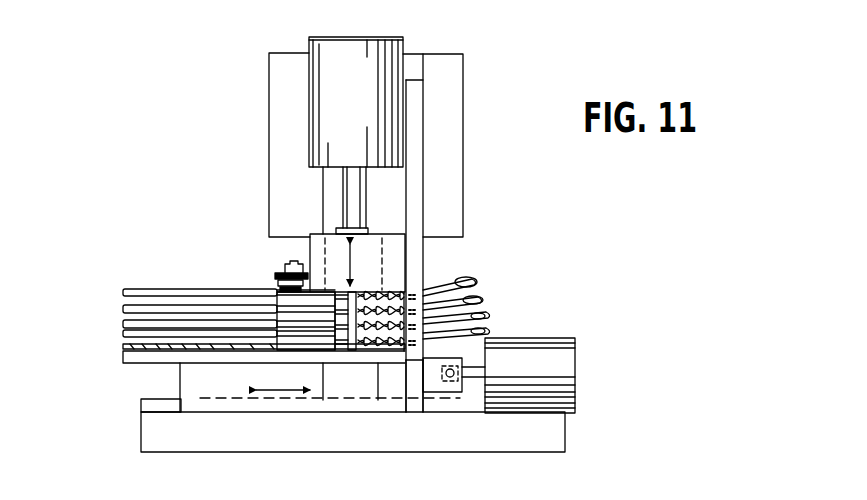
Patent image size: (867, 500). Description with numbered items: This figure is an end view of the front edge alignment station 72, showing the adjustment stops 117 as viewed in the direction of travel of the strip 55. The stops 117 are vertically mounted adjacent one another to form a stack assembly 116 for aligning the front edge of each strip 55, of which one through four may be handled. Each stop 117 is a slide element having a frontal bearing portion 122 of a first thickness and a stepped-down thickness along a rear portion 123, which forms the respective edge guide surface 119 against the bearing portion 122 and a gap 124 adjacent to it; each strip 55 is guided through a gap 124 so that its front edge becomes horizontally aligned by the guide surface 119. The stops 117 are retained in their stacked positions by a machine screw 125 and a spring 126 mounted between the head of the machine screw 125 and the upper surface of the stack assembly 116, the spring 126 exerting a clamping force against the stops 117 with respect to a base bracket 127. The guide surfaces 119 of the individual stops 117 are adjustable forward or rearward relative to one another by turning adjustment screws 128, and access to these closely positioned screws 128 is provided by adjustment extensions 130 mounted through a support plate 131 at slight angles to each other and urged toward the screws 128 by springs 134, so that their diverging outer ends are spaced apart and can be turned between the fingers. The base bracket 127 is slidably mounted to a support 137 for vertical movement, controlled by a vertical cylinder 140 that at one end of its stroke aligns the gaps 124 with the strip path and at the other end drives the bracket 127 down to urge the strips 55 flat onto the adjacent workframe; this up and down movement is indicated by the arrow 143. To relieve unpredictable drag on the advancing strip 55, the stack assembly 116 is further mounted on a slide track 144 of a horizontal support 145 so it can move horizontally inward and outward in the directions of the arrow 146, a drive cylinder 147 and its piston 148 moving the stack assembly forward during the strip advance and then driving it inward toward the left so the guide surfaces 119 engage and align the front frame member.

The front edge alignment station 72 is at (210, 176).
The strip 55 is at (130, 345).
The stack assembly 116 is at (211, 280).
The adjustment stops 117 is at (120, 293).
The edge guide surface 119 is at (273, 303).
The frontal bearing portion 122 is at (307, 333).
The rear portion 123 is at (158, 290).
The gap 124 is at (190, 308).
The machine screw 125 is at (280, 268).
The spring 126 is at (275, 287).
The base bracket 127 is at (380, 367).
The adjustment screws 128 is at (360, 293).
The adjustment extensions 130 is at (470, 277).
The support plate 131 is at (410, 365).
The springs 134 is at (398, 363).
The support 137 is at (455, 118).
The vertical cylinder 140 is at (308, 92).
The arrow 143 is at (353, 262).
The slide track 144 is at (141, 403).
The horizontal support 145 is at (175, 452).
The arrow 146 is at (292, 395).
The drive cylinder 147 is at (560, 338).
The piston 148 is at (472, 392).